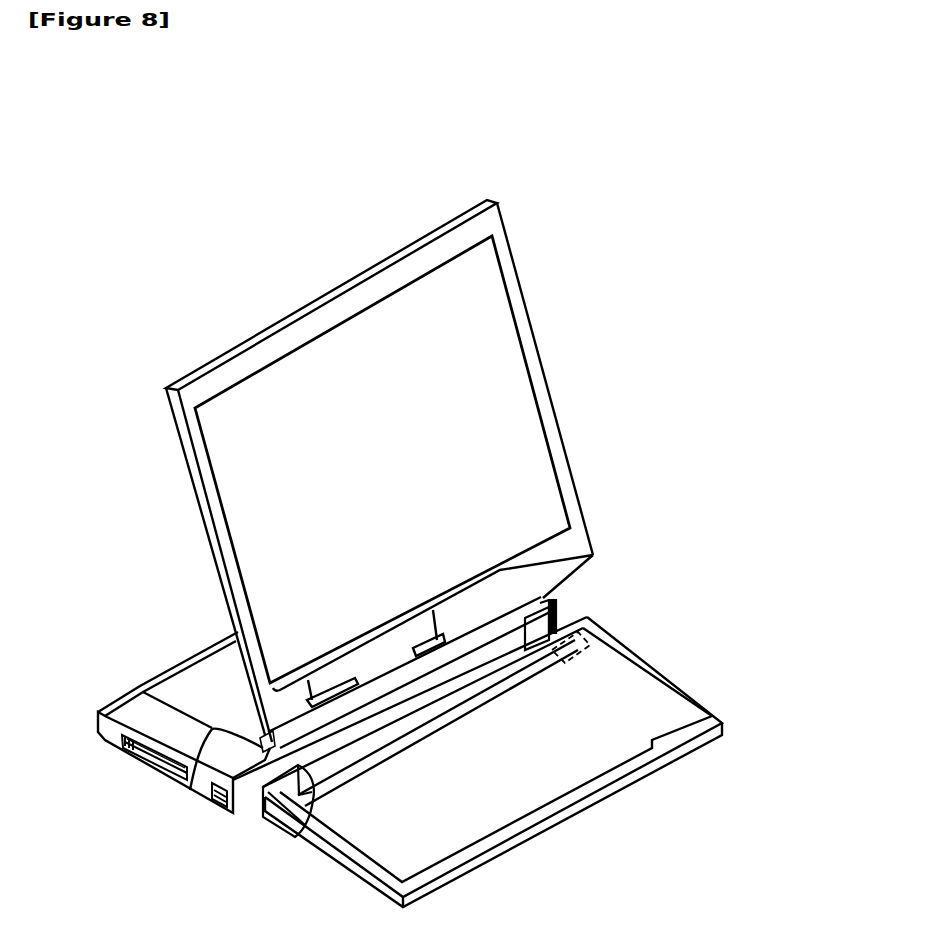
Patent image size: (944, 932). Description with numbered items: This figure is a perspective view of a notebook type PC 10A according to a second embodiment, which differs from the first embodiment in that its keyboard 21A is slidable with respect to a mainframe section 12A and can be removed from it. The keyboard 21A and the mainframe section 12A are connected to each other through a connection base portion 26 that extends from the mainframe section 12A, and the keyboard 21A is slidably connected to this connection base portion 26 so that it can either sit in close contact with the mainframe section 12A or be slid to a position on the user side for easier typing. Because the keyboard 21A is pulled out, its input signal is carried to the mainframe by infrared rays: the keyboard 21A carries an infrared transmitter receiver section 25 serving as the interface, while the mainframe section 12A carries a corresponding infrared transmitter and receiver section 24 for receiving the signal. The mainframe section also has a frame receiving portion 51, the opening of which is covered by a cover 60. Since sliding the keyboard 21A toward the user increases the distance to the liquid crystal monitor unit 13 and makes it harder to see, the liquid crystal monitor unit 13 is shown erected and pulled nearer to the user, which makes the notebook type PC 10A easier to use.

The notebook type PC 10A is at (705, 379).
The liquid crystal monitor unit 13 is at (557, 428).
The mainframe section 12A is at (593, 557).
The infrared transmitter and receiver section 24 is at (556, 610).
The infrared transmitter receiver section 25 is at (590, 640).
The keyboard 21A is at (673, 680).
The cover 60 is at (208, 682).
The frame receiving portion 51 is at (190, 783).
The connection base portion 26 is at (295, 837).